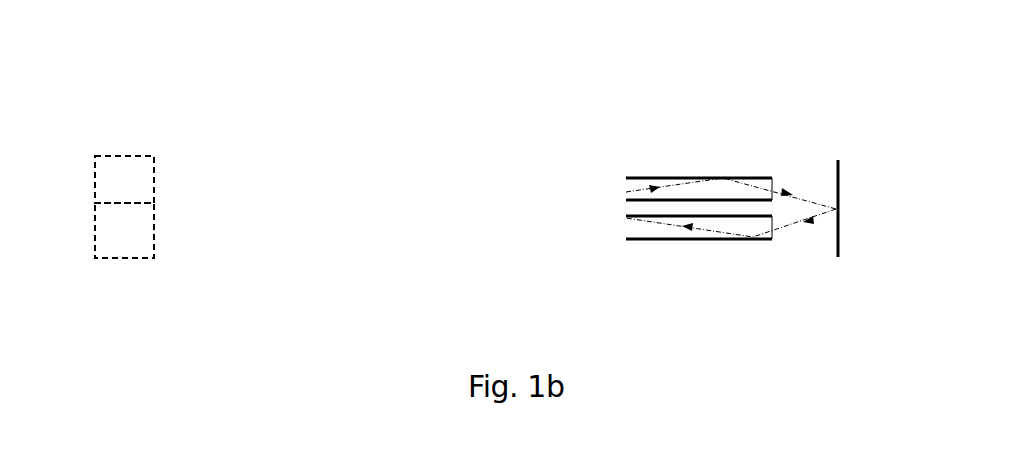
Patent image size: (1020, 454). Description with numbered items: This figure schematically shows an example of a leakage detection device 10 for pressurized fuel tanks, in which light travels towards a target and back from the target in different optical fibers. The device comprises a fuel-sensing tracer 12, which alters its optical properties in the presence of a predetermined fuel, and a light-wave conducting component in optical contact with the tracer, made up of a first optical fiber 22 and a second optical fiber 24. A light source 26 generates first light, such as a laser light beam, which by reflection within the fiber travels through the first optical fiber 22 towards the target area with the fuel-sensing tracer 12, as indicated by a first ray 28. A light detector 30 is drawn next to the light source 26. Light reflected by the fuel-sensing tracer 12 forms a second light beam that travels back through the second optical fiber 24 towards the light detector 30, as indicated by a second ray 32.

The leakage detection device 10 is at (656, 116).
The fuel-sensing tracer 12 is at (813, 165).
The first optical fiber 22 is at (250, 52).
The second optical fiber 24 is at (235, 243).
The light source 26 is at (125, 154).
The first ray 28 is at (497, 115).
The light detector 30 is at (122, 259).
The second ray 32 is at (698, 230).